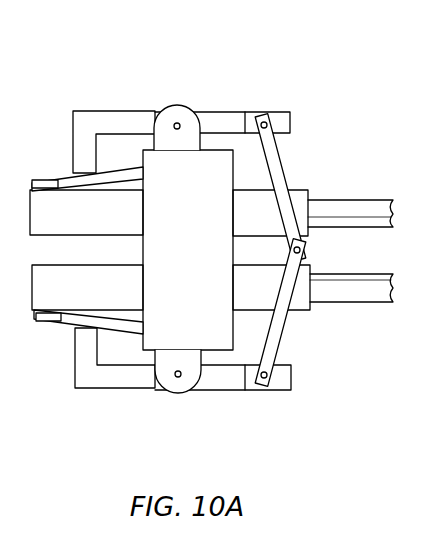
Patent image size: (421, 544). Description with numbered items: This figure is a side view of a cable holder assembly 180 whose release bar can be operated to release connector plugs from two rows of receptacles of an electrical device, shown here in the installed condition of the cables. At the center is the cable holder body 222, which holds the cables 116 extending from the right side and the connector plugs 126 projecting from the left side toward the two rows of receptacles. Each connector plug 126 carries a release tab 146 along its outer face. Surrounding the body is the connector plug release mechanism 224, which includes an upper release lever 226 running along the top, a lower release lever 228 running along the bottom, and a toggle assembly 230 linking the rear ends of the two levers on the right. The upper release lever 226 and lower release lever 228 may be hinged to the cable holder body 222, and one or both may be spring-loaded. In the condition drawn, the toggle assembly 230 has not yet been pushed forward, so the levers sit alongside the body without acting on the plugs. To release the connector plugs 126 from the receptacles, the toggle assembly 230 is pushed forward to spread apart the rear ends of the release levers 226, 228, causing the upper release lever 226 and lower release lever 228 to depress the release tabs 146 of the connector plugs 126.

The coupling assembly 180 is at (106, 61).
The release tabs 146 is at (43, 178).
The connector plugs 126 is at (48, 225).
The cable holder body 222 is at (172, 250).
The connector plug release mechanism 224 is at (84, 403).
The upper release lever 226 is at (228, 112).
The lower release lever 228 is at (238, 392).
The toggle assembly 230 is at (283, 150).
The cables 116 is at (352, 200).